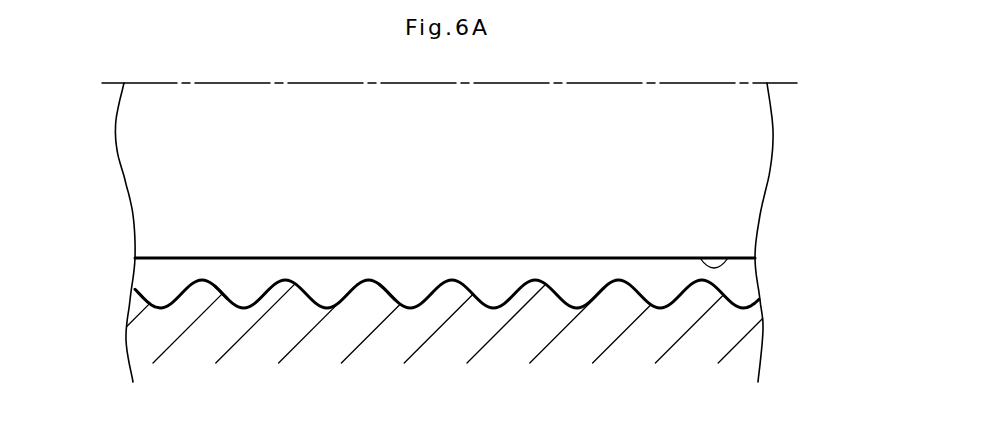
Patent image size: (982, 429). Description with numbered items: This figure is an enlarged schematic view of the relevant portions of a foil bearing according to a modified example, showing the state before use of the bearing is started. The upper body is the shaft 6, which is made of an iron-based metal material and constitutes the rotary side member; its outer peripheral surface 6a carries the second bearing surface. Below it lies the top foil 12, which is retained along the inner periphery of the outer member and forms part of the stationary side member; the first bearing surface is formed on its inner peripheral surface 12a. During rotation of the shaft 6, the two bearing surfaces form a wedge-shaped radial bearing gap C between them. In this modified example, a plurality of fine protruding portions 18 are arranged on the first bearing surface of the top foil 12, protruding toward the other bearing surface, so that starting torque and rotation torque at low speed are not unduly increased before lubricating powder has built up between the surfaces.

The shaft 6 is at (704, 195).
The outer peripheral surface 6a is at (728, 258).
The top foil 12 is at (721, 332).
The inner peripheral surface 12a is at (194, 268).
The fine protruding portions 18 is at (392, 279).
The radial bearing gap C is at (222, 272).